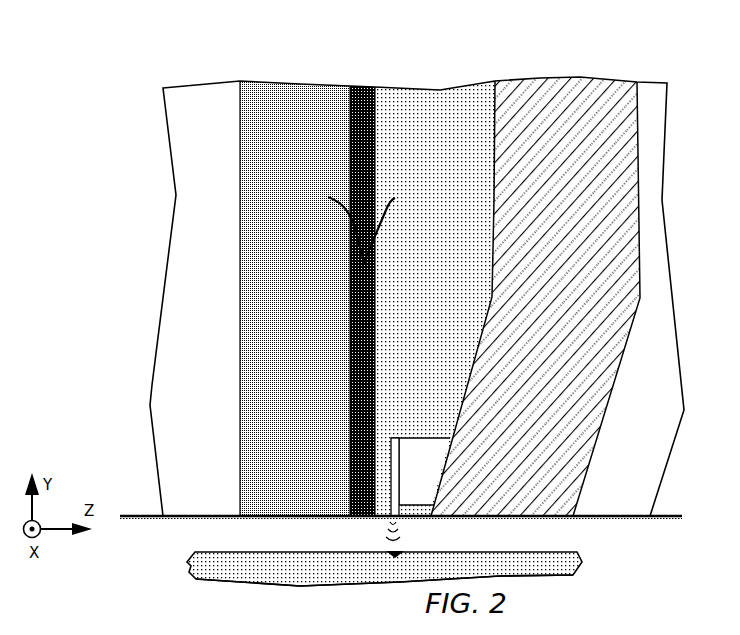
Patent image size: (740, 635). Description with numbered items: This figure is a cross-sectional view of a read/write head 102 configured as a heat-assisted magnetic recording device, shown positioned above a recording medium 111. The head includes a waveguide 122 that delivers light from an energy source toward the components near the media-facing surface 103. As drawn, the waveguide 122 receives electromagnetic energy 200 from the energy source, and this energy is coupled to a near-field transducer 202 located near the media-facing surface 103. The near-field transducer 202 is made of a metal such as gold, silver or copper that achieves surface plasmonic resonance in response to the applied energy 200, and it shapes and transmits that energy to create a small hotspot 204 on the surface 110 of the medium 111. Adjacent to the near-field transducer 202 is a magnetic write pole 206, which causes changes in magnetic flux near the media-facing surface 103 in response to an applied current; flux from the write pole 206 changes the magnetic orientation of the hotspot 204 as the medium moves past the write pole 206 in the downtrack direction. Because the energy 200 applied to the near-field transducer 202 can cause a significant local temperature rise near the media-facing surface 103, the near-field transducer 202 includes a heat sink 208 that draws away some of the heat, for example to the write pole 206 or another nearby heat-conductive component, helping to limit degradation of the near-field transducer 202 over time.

The read/write head 102 is at (150, 62).
The media-facing surface 103 is at (670, 519).
The surface of medium 110 is at (537, 560).
The recording medium 111 is at (563, 574).
The waveguide 122 is at (489, 58).
The electromagnetic energy 200 is at (348, 224).
The near-field transducer 202 is at (392, 523).
The hotspot 204 is at (395, 560).
The magnetic write pole 206 is at (578, 77).
The heat sink 208 is at (413, 498).